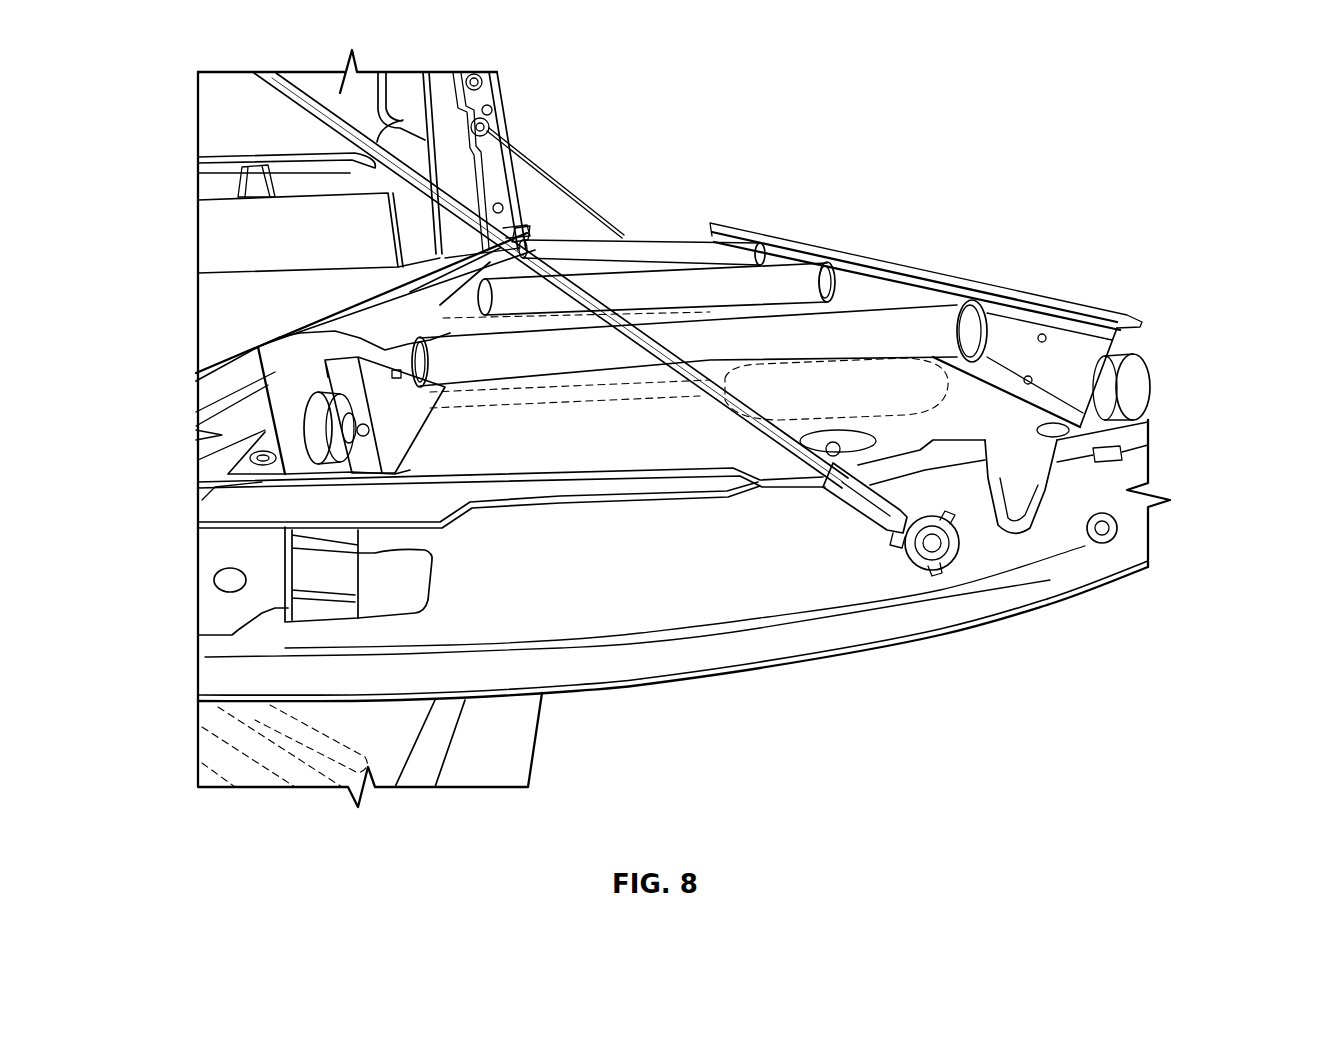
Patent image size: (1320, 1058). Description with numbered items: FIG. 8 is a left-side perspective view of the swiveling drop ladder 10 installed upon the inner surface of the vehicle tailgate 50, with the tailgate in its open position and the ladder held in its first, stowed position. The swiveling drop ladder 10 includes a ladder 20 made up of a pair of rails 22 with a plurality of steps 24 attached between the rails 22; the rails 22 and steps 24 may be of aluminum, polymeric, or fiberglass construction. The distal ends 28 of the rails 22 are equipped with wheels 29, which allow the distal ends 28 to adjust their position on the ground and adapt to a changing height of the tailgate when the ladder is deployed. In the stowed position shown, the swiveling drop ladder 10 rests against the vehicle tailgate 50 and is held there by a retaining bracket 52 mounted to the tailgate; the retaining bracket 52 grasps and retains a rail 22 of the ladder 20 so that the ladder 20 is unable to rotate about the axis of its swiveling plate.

The swiveling drop ladder 10 is at (970, 125).
The ladder 20 is at (817, 208).
The rails 22 is at (813, 243).
The steps 24 is at (653, 237).
The distal ends 28 is at (1120, 291).
The wheels 29 is at (1169, 385).
The vehicle tailgate 50 is at (1010, 600).
The retaining bracket 52 is at (285, 365).